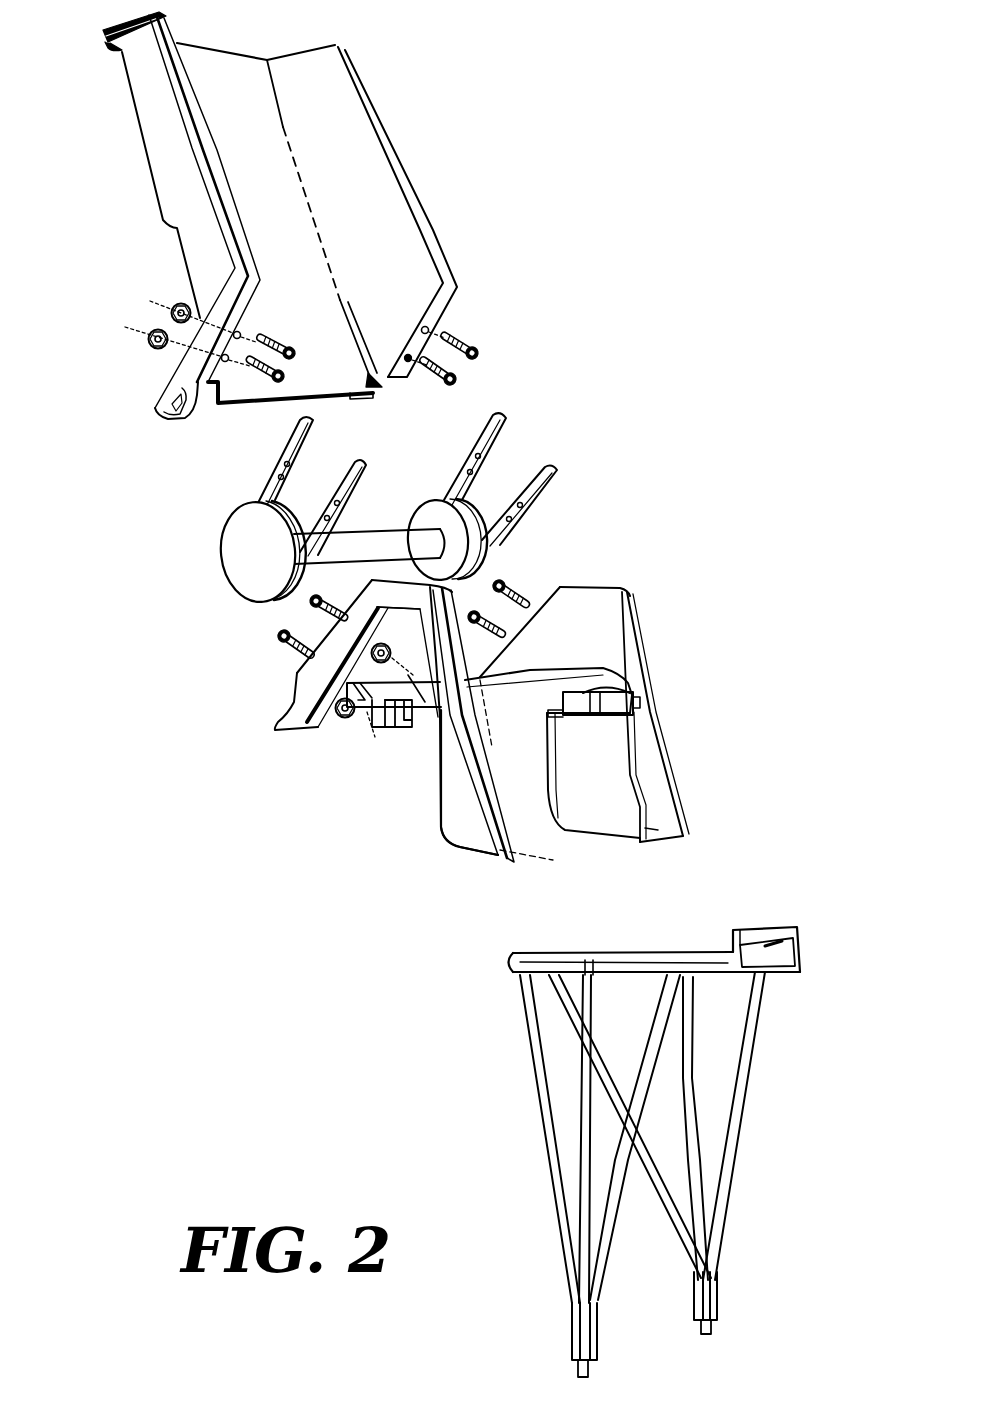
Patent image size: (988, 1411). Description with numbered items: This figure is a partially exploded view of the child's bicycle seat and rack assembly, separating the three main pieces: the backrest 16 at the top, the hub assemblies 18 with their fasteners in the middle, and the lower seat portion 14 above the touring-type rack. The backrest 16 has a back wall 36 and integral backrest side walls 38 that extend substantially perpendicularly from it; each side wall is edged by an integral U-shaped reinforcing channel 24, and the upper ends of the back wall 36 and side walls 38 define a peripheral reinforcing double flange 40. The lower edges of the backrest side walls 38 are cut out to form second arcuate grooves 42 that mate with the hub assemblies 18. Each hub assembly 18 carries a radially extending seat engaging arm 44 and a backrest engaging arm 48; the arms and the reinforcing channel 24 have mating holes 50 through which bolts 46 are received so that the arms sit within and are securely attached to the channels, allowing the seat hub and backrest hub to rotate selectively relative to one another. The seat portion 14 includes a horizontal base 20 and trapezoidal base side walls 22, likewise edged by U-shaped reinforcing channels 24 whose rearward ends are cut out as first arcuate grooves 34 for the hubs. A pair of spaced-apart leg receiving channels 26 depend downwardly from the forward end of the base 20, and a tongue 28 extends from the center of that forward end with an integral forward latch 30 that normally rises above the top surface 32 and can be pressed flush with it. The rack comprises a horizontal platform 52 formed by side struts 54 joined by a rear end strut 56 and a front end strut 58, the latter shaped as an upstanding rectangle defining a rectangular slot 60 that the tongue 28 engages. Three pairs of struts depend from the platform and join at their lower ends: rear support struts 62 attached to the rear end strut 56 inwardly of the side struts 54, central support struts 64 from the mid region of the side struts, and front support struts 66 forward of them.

The lower seat portion 14 is at (745, 713).
The backrest 16 is at (455, 211).
The hub assembly 18 is at (205, 548).
The horizontal base 20 is at (535, 668).
The base side walls 22 is at (603, 597).
The U-shaped reinforcing channel 24 is at (245, 238).
The leg receiving channels 26 is at (530, 787).
The tongue 28 is at (645, 705).
The forward latch 30 is at (615, 690).
The top surface 32 is at (563, 690).
The first arcuate grooves 34 is at (288, 700).
The back wall 36 is at (221, 68).
The backrest side walls 38 is at (172, 155).
The double flange 40 is at (105, 33).
The second arcuate grooves 42 is at (178, 420).
The seat engaging arm 44 is at (555, 480).
The bolts 46 is at (266, 386).
The backrest engaging arm 48 is at (507, 428).
The mating holes 50 is at (272, 480).
The horizontal platform 52 is at (637, 930).
The side struts 54 is at (590, 950).
The rear end strut 56 is at (530, 950).
The front end strut 58 is at (810, 940).
The rectangular slot 60 is at (782, 930).
The rear support struts 62 is at (540, 1110).
The central support struts 64 is at (582, 1160).
The front support struts 66 is at (615, 1218).